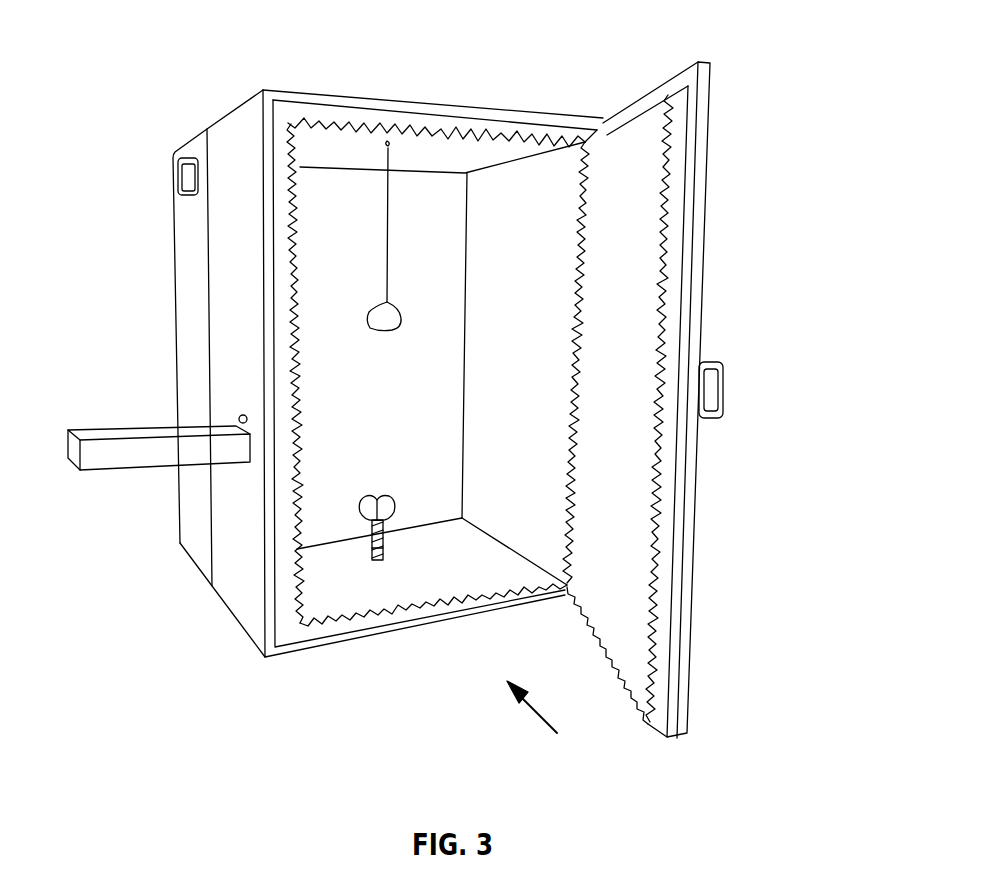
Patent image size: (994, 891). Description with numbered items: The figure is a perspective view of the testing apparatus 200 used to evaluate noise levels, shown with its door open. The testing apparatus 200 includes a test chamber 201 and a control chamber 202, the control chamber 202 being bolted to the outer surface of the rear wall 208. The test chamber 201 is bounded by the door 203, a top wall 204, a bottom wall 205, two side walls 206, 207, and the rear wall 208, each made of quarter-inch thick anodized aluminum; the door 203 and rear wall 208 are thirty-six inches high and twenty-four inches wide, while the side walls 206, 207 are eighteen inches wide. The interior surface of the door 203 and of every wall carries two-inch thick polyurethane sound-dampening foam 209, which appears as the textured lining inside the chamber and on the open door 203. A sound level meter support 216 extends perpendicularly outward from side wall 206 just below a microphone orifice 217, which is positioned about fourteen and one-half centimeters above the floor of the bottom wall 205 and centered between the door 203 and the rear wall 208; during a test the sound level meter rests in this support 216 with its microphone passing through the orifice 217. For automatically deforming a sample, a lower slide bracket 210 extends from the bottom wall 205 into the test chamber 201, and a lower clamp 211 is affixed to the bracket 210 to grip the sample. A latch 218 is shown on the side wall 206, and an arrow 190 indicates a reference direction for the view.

The direction arrow 190 is at (538, 722).
The testing apparatus 200 is at (588, 47).
The test chamber 201 is at (243, 625).
The control chamber 202 is at (192, 517).
The door 203 is at (697, 525).
The top wall 204 is at (423, 103).
The bottom wall 205 is at (348, 597).
The side wall 206 is at (232, 592).
The side wall 207 is at (542, 379).
The rear wall 208 is at (401, 415).
The sound-dampening foam 209 is at (495, 595).
The lower slide bracket 210 is at (388, 546).
The lower clamp 211 is at (378, 496).
The sound level meter support 216 is at (112, 458).
The microphone orifice 217 is at (240, 413).
The latch 218 is at (187, 170).